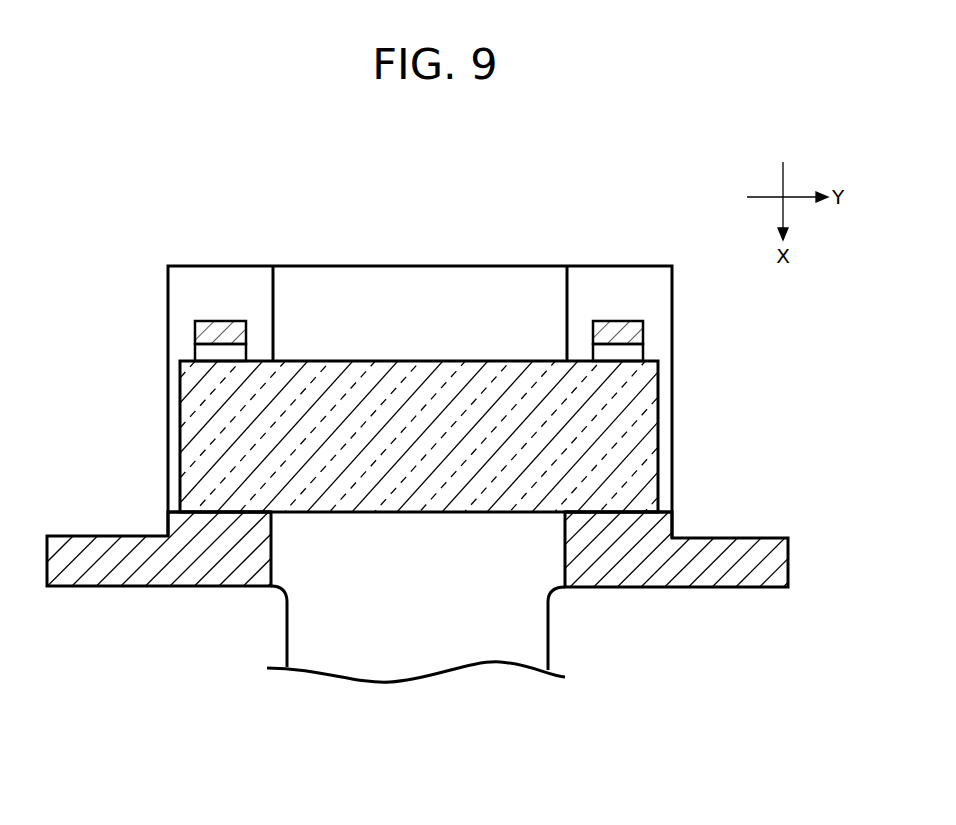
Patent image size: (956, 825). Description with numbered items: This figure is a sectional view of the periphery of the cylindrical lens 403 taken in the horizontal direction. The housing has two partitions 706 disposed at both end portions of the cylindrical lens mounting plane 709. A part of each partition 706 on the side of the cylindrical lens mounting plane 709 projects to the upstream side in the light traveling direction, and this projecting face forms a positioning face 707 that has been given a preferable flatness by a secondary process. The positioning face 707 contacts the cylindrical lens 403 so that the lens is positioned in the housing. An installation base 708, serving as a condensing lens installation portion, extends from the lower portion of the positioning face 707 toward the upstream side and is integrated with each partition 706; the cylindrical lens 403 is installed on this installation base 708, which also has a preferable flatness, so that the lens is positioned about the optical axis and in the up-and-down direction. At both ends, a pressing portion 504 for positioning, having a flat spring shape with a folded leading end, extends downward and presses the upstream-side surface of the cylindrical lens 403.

The cylindrical lens 403 is at (426, 350).
The pressing portion for positioning 504 is at (200, 330).
The partition 706 is at (102, 547).
The positioning face 707 is at (252, 512).
The installation base 708 is at (226, 282).
The cylindrical lens mounting plane 709 is at (423, 650).